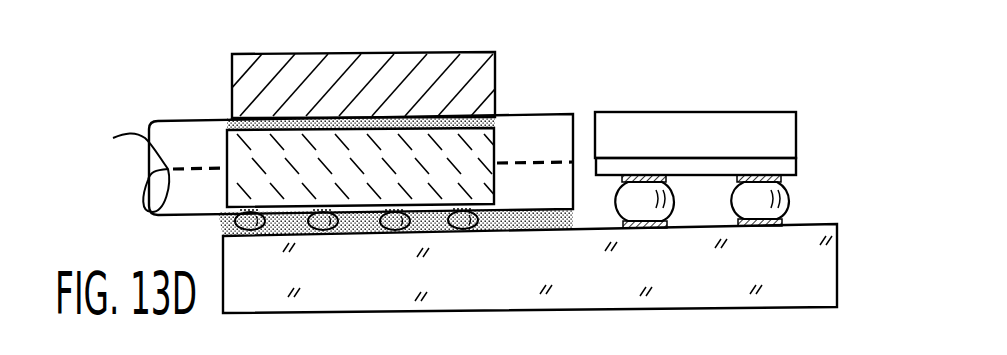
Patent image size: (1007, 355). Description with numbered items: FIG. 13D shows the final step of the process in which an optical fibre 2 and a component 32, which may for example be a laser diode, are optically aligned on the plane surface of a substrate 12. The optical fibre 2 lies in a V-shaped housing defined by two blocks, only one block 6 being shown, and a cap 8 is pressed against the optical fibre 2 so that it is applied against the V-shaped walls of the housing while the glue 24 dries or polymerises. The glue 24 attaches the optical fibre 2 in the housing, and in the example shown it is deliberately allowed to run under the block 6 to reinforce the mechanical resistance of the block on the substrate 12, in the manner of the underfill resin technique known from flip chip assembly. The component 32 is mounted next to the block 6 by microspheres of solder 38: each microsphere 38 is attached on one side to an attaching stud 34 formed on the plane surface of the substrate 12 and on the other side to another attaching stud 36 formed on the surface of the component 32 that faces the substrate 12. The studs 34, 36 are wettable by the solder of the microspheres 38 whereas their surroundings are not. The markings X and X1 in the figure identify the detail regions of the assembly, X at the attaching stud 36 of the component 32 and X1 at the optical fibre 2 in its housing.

The optical fibre 2 is at (188, 120).
The block 6 is at (492, 149).
The cap 8 is at (326, 62).
The substrate 12 is at (832, 265).
The glue 24 is at (405, 126).
The component (laser diode) 32 is at (650, 112).
The attaching stud 34 is at (648, 225).
The attaching stud 36 is at (790, 165).
The microsphere of solder 38 is at (756, 210).
The detail region X is at (778, 158).
The detail region X1 is at (120, 170).